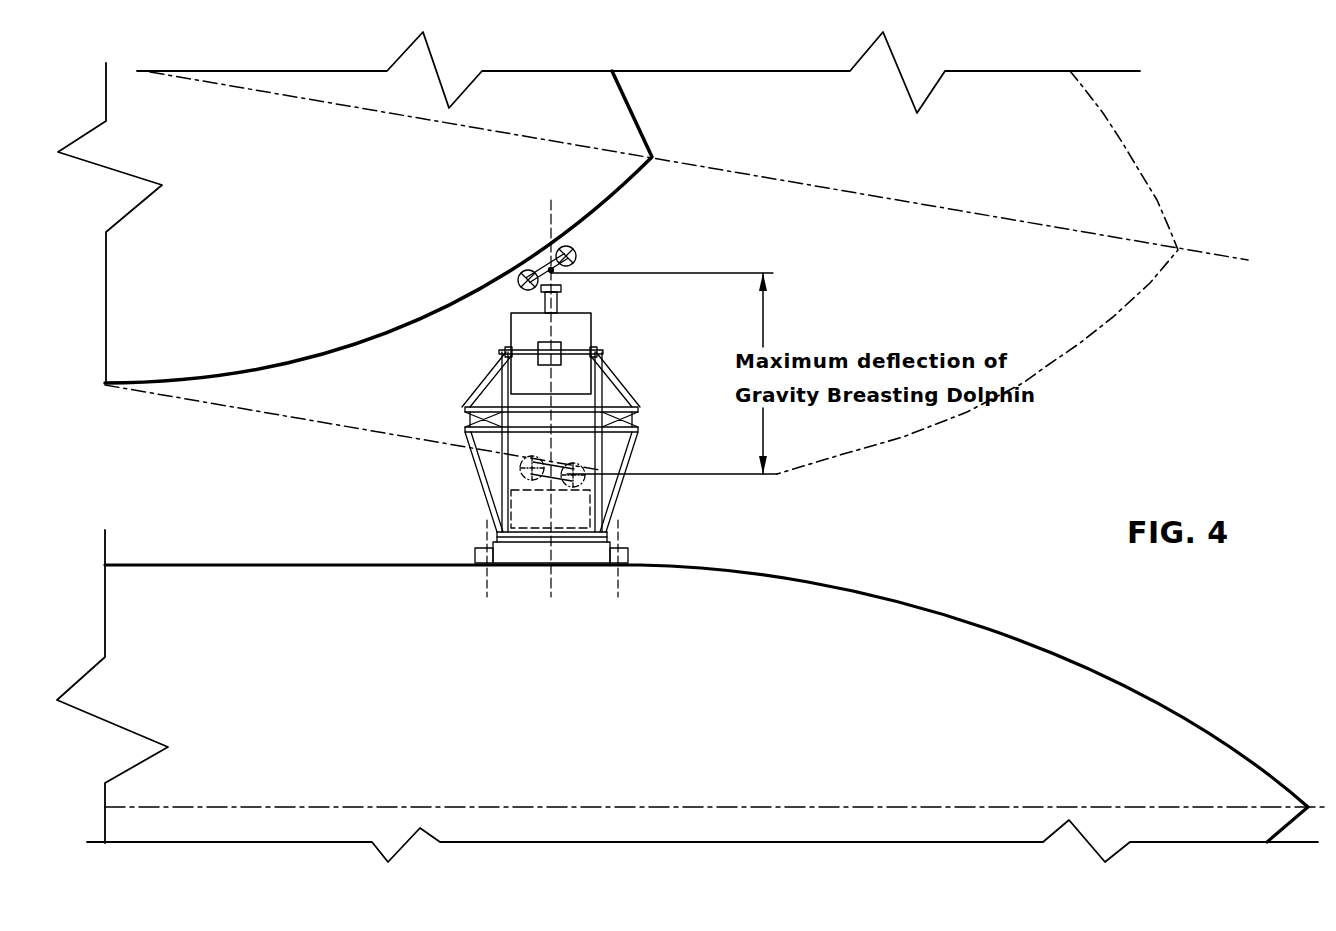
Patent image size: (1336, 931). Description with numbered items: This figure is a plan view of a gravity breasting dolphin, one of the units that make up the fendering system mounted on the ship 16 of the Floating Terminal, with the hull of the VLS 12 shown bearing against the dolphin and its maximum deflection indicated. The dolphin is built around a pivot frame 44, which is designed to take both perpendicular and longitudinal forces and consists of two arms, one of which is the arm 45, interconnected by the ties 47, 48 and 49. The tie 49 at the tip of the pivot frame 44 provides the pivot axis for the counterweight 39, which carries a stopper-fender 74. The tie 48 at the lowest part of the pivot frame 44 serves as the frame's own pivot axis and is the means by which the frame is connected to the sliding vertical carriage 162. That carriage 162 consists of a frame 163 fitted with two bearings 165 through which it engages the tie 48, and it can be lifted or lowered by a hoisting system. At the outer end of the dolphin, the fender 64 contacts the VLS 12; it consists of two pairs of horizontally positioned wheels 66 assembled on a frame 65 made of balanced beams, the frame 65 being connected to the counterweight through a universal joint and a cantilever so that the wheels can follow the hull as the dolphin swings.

The VLS 12 is at (490, 228).
The ship 16 is at (762, 598).
The counterweight 39 is at (593, 333).
The pivot frame 44 is at (480, 397).
The arm 45 is at (623, 458).
The tie 47 is at (613, 410).
The tie 48 is at (557, 532).
The tie 49 is at (527, 350).
The fender 64 is at (642, 223).
The frame 65 is at (562, 291).
The wheels 66 is at (580, 247).
The stopper-fender 74 is at (546, 345).
The sliding vertical carriage 162 is at (620, 548).
The frame 163 is at (520, 550).
The bearings 165 is at (497, 532).